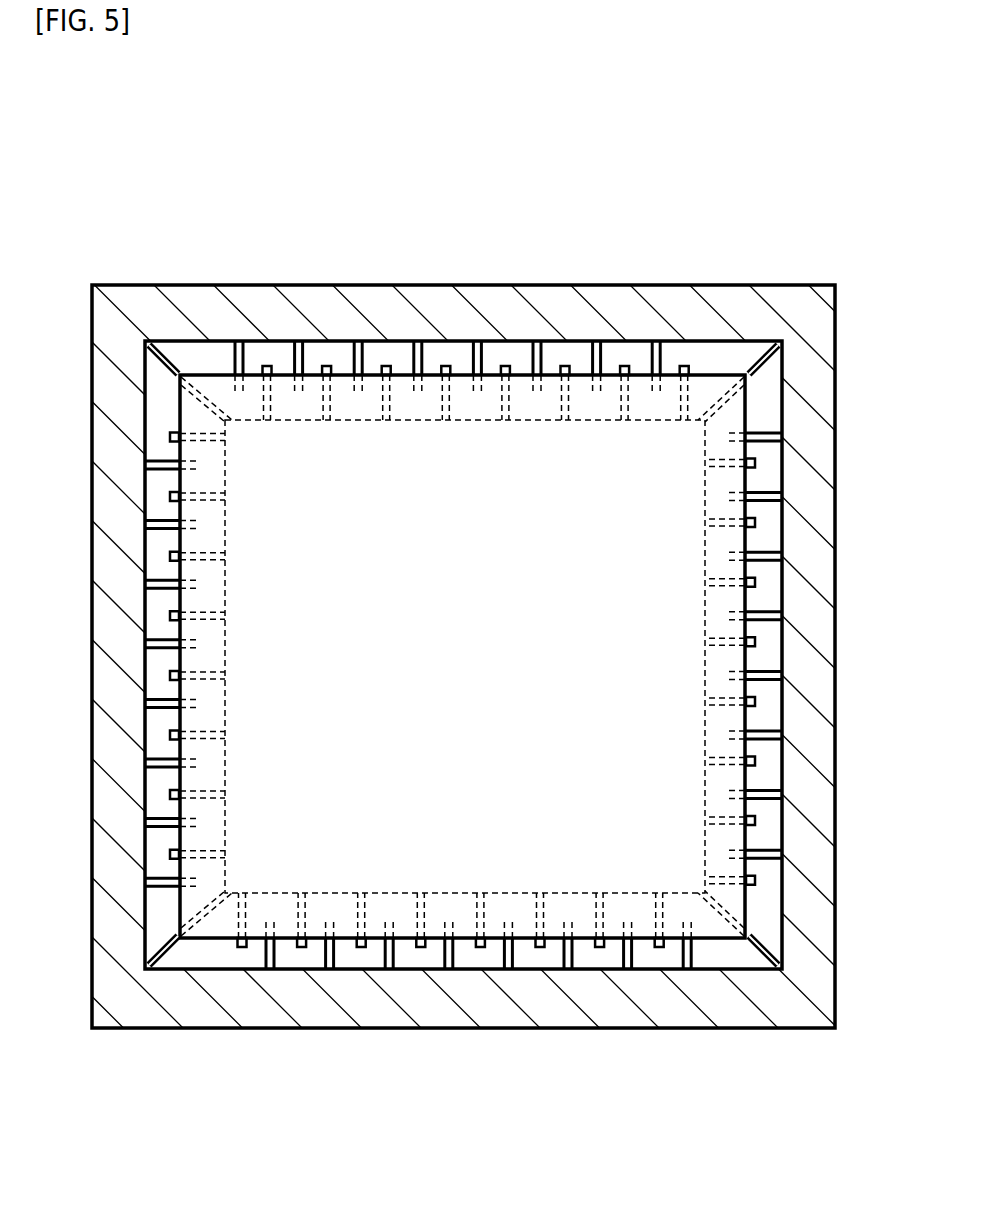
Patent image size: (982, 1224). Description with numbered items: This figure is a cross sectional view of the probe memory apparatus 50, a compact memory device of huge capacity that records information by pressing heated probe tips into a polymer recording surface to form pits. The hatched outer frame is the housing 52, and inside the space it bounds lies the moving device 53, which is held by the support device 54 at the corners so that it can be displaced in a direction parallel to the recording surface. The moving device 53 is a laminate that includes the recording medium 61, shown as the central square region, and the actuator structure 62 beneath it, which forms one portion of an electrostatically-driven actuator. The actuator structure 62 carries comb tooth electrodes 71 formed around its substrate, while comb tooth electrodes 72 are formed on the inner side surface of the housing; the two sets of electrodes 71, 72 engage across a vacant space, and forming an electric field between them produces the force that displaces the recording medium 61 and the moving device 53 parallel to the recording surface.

The probe memory apparatus 50 is at (668, 213).
The housing 52 is at (427, 290).
The moving device 53 is at (710, 367).
The support device 54 is at (165, 368).
The recording medium 61 is at (493, 858).
The actuator structure 62 is at (283, 895).
The comb tooth electrodes 71 is at (328, 363).
The comb tooth electrodes 72 is at (292, 357).